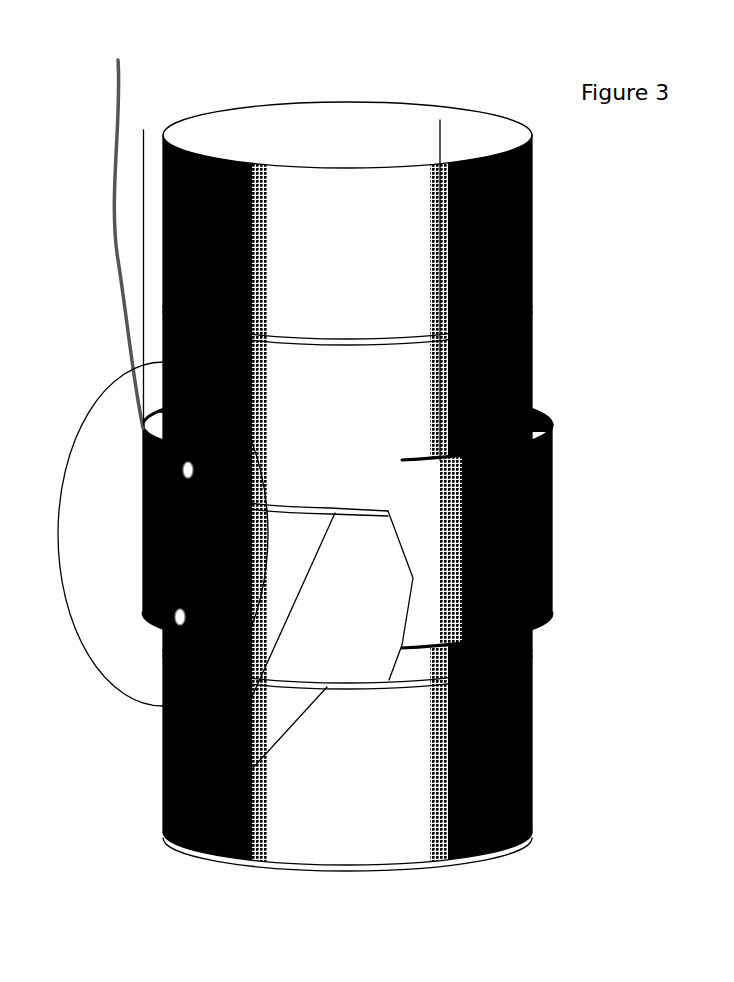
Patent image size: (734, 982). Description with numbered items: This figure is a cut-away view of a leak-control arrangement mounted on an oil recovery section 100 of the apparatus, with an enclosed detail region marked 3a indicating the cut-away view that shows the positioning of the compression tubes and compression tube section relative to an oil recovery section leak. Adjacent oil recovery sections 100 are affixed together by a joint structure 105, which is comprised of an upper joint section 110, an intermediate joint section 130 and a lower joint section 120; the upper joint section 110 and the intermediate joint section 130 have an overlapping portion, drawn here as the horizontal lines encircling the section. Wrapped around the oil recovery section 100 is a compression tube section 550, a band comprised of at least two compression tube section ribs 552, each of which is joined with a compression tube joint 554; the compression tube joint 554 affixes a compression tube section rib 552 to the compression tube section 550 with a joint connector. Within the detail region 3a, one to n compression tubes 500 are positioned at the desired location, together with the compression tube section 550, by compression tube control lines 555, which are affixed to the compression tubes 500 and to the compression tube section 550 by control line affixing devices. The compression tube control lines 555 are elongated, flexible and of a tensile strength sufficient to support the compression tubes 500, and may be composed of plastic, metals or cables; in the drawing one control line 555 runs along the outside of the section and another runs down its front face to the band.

The oil recovery section 100 is at (482, 237).
The joint structure 105 is at (187, 840).
The upper joint section 110 is at (303, 500).
The lower joint section 120 is at (353, 519).
The intermediate joint section 130 is at (337, 516).
The compression tube 500 is at (165, 410).
The compression tube section 550 is at (505, 515).
The compression tube section rib 552 is at (548, 430).
The compression tube joint 554 is at (393, 663).
The compression tube control line 555 is at (143, 150).
The cut-away view 3a is at (112, 690).